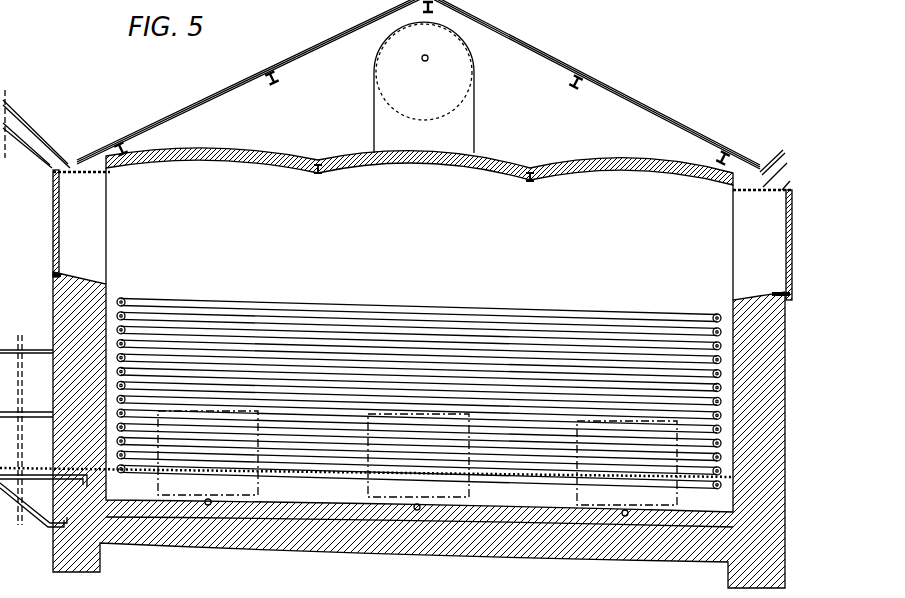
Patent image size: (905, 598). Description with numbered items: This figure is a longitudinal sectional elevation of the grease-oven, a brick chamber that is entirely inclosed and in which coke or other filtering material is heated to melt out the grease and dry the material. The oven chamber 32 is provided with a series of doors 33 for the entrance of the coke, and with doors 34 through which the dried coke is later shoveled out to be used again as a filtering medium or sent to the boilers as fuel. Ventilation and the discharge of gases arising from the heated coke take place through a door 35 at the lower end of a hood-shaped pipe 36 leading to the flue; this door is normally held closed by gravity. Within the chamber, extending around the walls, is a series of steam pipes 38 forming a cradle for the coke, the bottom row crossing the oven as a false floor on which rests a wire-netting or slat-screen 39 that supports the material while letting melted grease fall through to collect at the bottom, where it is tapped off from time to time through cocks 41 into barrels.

The drying chamber 32 is at (419, 368).
The doors 33 is at (422, 234).
The doors 34 is at (417, 458).
The door 35 is at (424, 67).
The hood-shaped pipe 36 is at (409, 87).
The pipes 38 is at (419, 384).
The wire-netting or wrought-iron slat-screen 39 is at (527, 477).
The cocks 41 is at (211, 501).